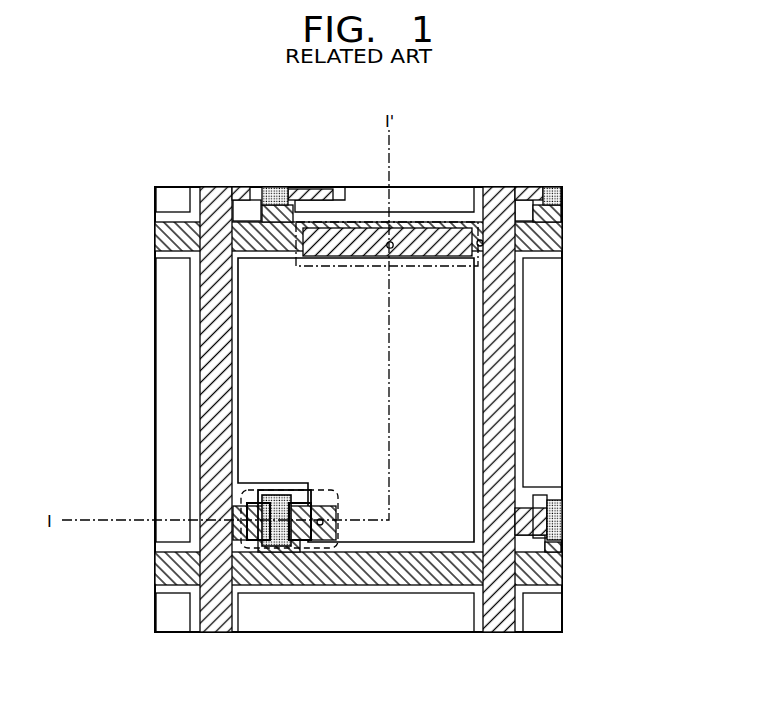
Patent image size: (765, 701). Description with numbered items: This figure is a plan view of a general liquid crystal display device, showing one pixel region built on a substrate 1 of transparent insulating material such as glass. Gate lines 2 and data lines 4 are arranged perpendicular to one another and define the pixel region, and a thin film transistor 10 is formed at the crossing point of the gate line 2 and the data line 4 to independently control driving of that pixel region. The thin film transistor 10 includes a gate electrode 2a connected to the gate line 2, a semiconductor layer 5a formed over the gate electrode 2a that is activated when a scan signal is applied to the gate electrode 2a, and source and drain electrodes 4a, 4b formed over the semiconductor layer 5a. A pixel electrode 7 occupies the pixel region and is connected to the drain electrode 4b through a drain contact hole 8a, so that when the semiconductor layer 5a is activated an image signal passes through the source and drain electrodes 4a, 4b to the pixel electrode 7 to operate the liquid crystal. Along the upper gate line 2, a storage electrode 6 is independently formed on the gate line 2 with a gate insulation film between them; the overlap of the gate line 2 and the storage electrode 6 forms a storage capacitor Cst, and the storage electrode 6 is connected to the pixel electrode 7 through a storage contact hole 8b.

The substrate 1 is at (562, 462).
The gate line 2 is at (155, 236).
The data line 4 is at (515, 345).
The pixel electrode 7 is at (467, 298).
The storage electrode 6 is at (438, 228).
The storage capacitor Cst is at (482, 243).
The storage contact hole 8b is at (389, 242).
The drain contact hole 8a is at (335, 518).
The gate electrode 2a is at (300, 506).
The source electrode 4a is at (260, 503).
The drain electrode 4b is at (318, 507).
The semiconductor layer 5a is at (278, 495).
The thin film transistor 10 is at (278, 548).